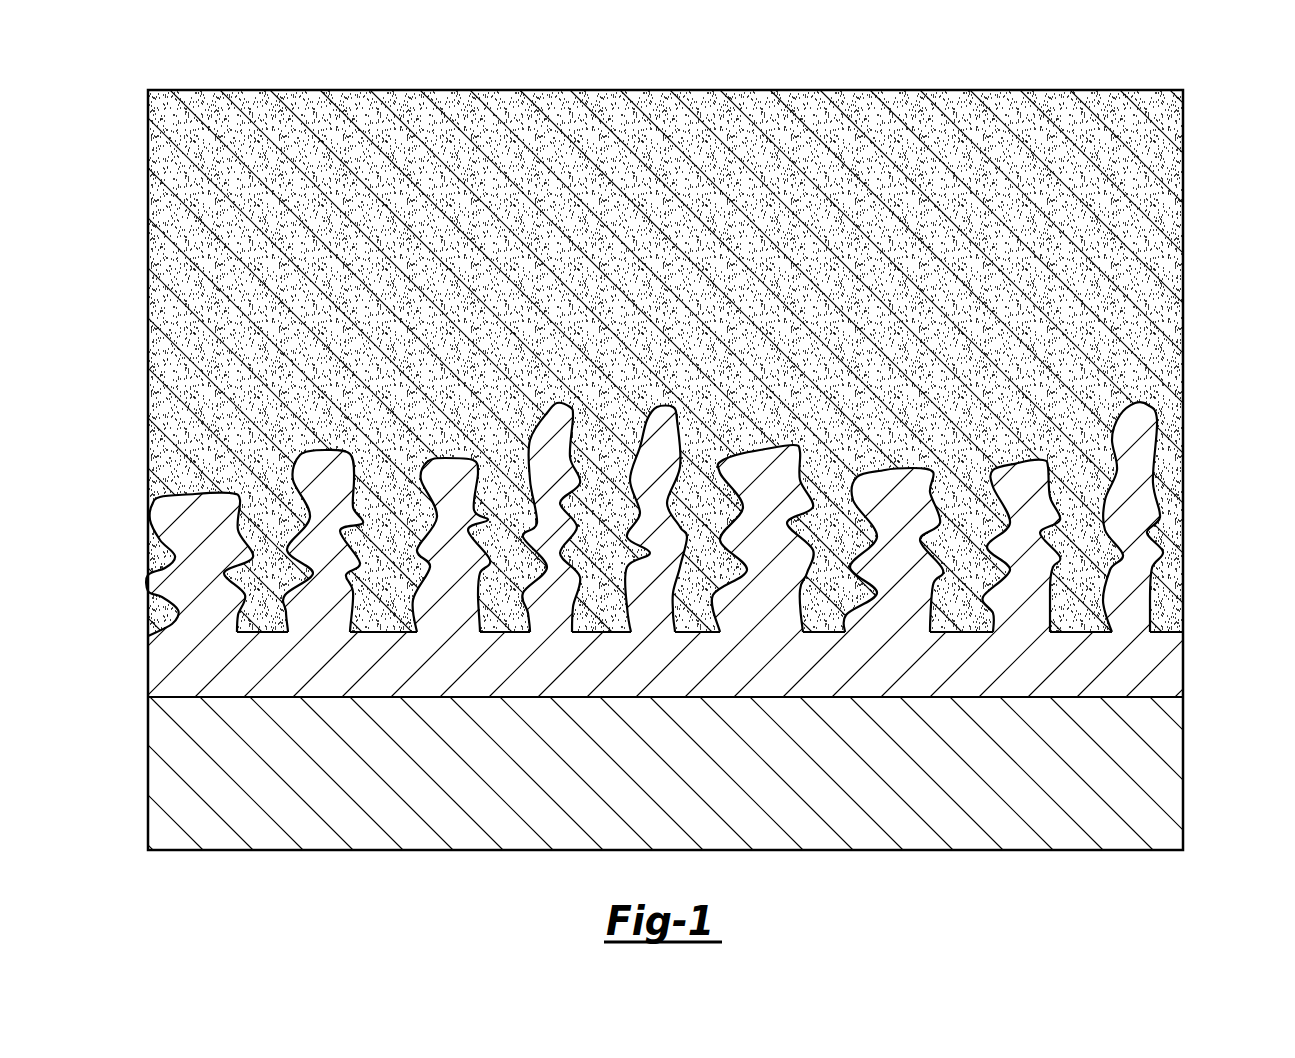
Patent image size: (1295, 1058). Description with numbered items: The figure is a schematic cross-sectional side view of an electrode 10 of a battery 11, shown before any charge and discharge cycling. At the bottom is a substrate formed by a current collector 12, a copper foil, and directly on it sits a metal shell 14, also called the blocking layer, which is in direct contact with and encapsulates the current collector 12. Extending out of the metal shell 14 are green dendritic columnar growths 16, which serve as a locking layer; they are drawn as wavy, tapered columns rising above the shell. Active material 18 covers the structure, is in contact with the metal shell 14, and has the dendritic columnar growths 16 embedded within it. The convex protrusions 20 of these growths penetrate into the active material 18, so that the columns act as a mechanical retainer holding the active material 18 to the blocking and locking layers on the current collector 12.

The electrode 10 is at (107, 88).
The battery 11 is at (1200, 74).
The current collector 12 is at (1165, 787).
The metal shell 14 is at (1165, 671).
The dendritic columnar growths 16 is at (696, 487).
The active material 18 is at (1165, 196).
The convex protrusions 20 is at (287, 548).